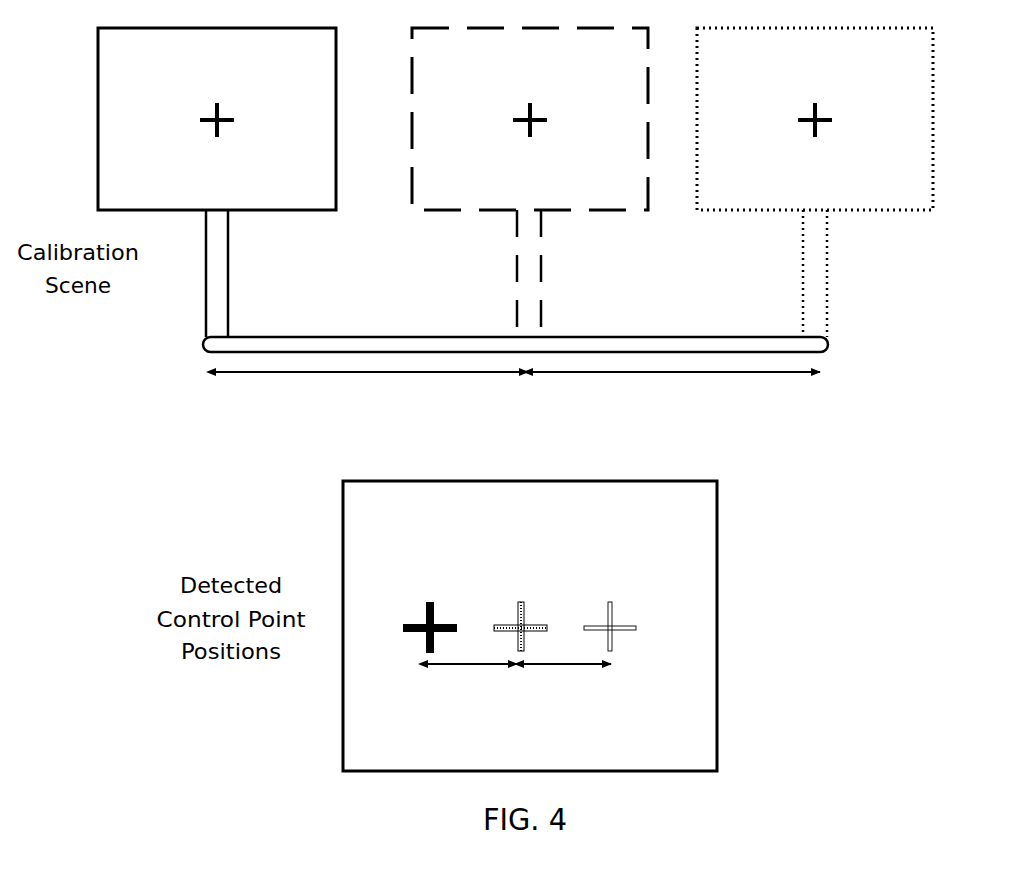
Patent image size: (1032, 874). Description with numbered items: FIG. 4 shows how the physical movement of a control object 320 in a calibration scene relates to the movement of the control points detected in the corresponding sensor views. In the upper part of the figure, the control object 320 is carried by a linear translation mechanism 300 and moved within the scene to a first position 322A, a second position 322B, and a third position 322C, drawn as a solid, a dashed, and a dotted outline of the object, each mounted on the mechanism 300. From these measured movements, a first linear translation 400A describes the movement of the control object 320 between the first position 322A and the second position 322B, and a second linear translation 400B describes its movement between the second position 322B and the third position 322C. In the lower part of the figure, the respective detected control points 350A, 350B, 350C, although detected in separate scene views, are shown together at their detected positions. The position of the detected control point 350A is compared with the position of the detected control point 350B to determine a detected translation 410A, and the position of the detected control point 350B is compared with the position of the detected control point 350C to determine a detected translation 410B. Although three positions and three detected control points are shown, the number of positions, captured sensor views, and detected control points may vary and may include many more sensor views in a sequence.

The control object 320 is at (70, 137).
The first position 322A is at (250, 262).
The second position 322B is at (568, 262).
The third position 322C is at (850, 262).
The linear translation mechanism 300 is at (856, 333).
The first linear translation 400A is at (371, 395).
The second linear translation 400B is at (676, 396).
The detected control point 350A is at (455, 599).
The detected control point 350B is at (542, 599).
The detected control point 350C is at (632, 599).
The detected translation 410A is at (472, 697).
The detected translation 410B is at (567, 697).